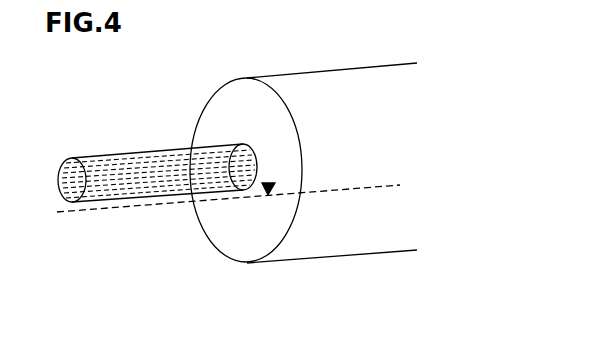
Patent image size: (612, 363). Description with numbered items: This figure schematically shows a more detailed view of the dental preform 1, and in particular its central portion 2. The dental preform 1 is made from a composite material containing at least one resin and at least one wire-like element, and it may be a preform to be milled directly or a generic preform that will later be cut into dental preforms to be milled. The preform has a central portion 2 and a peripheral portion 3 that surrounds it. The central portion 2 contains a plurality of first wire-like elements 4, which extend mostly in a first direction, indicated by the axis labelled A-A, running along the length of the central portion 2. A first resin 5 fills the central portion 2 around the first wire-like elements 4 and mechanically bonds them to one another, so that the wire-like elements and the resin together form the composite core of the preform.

The dental preform 1 is at (315, 90).
The central portion 2 is at (275, 192).
The peripheral portion 3 is at (217, 115).
The first wire-like elements 4 is at (215, 158).
The first resin 5 is at (163, 201).